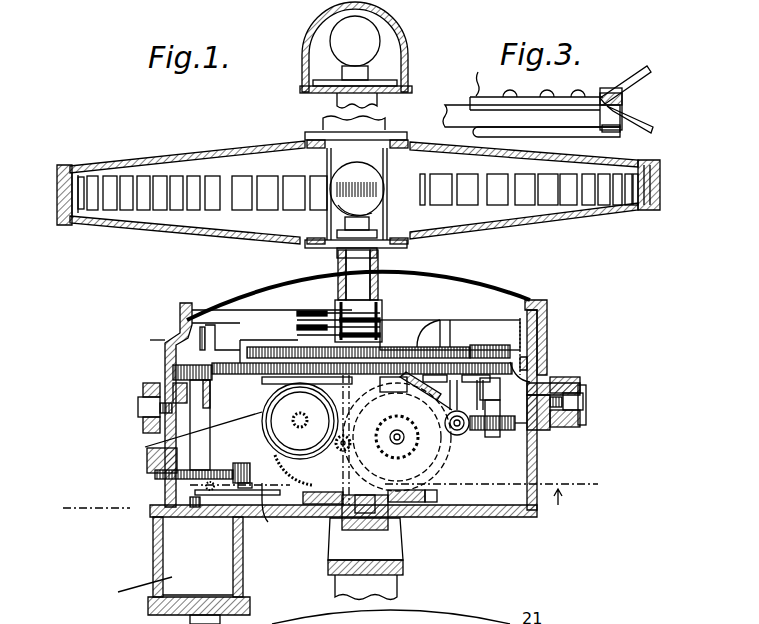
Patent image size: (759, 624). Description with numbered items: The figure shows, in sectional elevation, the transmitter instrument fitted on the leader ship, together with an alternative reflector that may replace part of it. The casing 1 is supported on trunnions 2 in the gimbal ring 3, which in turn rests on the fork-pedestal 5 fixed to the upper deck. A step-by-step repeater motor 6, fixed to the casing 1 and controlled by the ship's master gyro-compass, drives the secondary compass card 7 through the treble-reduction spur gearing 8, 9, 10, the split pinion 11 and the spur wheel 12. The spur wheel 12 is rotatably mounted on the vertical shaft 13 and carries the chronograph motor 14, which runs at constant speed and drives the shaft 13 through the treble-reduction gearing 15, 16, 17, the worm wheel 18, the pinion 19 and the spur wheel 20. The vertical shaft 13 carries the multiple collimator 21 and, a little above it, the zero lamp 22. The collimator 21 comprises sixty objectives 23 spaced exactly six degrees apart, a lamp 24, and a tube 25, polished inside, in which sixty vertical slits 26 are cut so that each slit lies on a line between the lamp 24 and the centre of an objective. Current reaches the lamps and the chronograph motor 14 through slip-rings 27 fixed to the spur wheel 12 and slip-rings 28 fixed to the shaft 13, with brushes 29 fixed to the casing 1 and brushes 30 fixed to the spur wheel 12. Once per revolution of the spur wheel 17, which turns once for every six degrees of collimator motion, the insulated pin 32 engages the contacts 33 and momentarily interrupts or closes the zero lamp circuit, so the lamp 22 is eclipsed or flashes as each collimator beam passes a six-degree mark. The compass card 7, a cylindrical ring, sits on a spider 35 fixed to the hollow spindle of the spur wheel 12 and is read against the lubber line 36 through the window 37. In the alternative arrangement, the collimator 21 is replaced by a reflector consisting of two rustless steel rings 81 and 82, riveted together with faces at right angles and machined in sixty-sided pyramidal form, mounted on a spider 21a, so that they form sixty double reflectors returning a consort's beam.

In FIG. 1, the casing 1 is at (537, 443).
In FIG. 1, the trunnions 2 is at (148, 410).
In FIG. 1, the gimbal ring 3 is at (582, 387).
In FIG. 1, the fork-pedestal 5 is at (403, 563).
In FIG. 1, the repeater motor 6 is at (172, 543).
In FIG. 1, the secondary compass card 7 is at (187, 342).
In FIG. 1, the spur gearing 8 is at (185, 500).
In FIG. 1, the spur gearing 9 is at (268, 512).
In FIG. 1, the spur gearing 10 is at (157, 476).
In FIG. 1, the split pinion 11 is at (173, 370).
In FIG. 1, the spur wheel 12 is at (533, 386).
In FIG. 1, the vertical shaft 13 is at (370, 276).
In FIG. 1, the chronograph motor 14 is at (282, 428).
In FIG. 1, the reduction gearing 15 is at (313, 470).
In FIG. 1, the reduction gearing 16 is at (417, 468).
In FIG. 1, the spur wheel 17 is at (537, 453).
In FIG. 1, the worm wheel 18 is at (580, 423).
In FIG. 1, the pinion 19 is at (550, 364).
In FIG. 1, the spur wheel 20 is at (460, 347).
In FIG. 1, the multiple collimator 21 is at (210, 152).
In FIG. 3, the spider 21a is at (470, 117).
In FIG. 1, the zero lamp 22 is at (340, 33).
In FIG. 1, the objectives 23 is at (660, 180).
In FIG. 1, the lamp 24 is at (356, 178).
In FIG. 1, the tube 25 is at (338, 222).
In FIG. 1, the vertical slits 26 is at (395, 225).
In FIG. 1, the slip-rings 27 is at (427, 497).
In FIG. 1, the slip-rings 28 is at (385, 323).
In FIG. 1, the brushes 29 is at (410, 508).
In FIG. 1, the brushes 30 is at (240, 305).
In FIG. 1, the insulated pin 32 is at (433, 436).
In FIG. 1, the contacts 33 is at (173, 397).
In FIG. 1, the spider 35 is at (198, 330).
In FIG. 1, the lubber line 36 is at (518, 360).
In FIG. 1, the window 37 is at (543, 338).
In FIG. 3, the reflector ring 81 is at (650, 80).
In FIG. 3, the reflector ring 82 is at (652, 122).